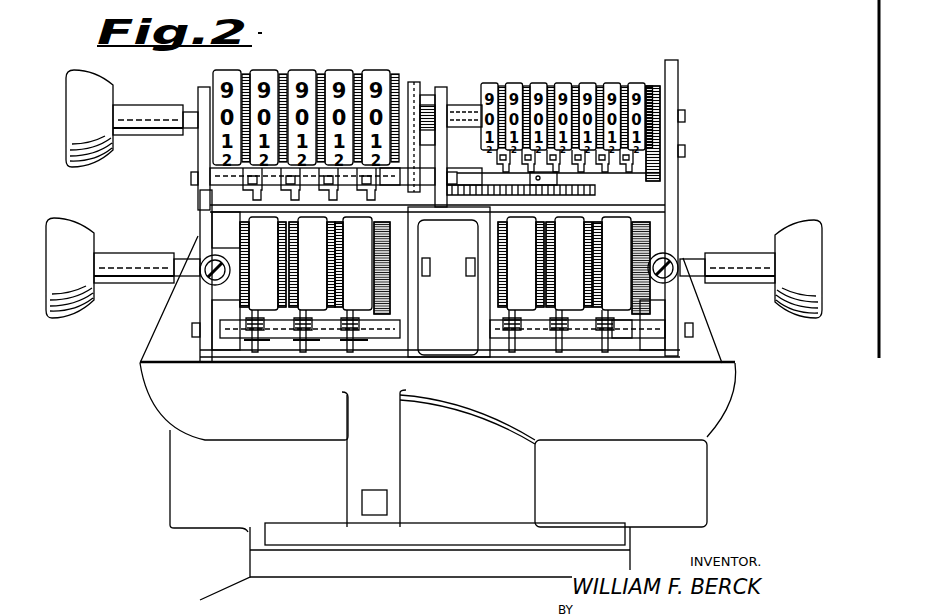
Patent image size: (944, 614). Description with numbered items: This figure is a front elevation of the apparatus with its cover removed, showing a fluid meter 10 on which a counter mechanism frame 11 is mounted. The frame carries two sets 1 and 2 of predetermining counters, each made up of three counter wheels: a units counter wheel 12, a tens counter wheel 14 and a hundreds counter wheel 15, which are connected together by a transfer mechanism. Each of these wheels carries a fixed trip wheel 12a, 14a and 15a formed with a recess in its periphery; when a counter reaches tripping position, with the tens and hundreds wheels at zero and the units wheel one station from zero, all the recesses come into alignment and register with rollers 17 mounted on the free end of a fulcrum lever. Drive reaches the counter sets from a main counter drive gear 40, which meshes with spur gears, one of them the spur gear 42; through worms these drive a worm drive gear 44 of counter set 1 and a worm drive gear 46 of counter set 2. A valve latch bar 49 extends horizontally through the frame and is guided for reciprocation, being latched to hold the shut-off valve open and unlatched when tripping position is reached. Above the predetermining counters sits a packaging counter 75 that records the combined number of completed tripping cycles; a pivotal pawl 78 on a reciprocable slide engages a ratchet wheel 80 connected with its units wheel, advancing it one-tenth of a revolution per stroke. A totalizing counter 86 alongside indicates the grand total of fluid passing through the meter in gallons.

The predetermining counter set 1 is at (236, 298).
The predetermining counter set 2 is at (528, 348).
The fluid meter 10 is at (297, 563).
The counter mechanism frame 11 is at (680, 184).
The units counter wheel 12 is at (366, 218).
The trip wheel 12a is at (378, 352).
The tens counter wheel 14 is at (312, 218).
The trip wheel 14a is at (330, 352).
The hundreds counter wheel 15 is at (268, 218).
The trip wheel 15a is at (282, 352).
The rollers 17 is at (245, 360).
The main counter drive gear 40 is at (460, 191).
The spur gear 42 is at (580, 191).
The worm drive gear 44 is at (365, 311).
The worm drive gear 46 is at (638, 336).
The valve latch bar 49 is at (387, 500).
The packaging counter 75 is at (335, 72).
The pawl 78 is at (418, 84).
The ratchet wheel 80 is at (430, 96).
The totalizing counter 86 is at (560, 84).